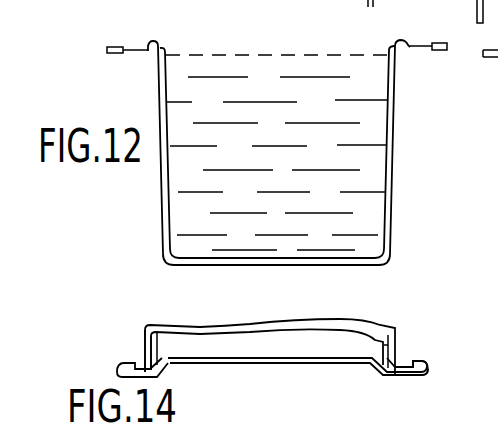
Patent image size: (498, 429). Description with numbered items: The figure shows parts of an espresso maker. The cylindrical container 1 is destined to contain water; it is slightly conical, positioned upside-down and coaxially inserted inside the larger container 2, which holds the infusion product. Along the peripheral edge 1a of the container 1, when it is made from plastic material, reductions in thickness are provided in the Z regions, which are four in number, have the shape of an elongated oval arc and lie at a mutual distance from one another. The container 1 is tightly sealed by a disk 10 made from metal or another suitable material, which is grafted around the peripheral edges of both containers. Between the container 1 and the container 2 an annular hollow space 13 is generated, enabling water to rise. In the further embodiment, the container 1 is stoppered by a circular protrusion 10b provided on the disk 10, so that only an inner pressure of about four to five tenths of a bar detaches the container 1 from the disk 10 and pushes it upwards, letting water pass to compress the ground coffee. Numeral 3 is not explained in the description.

In FIG. 12, the cylindrical container 1 is at (165, 192).
In FIG. 12, the peripheral edge 1a is at (107, 52).
In FIG. 12, the Z regions Z is at (137, 50).
In FIG. 14, the larger container 2 is at (398, 339).
In FIG. 14, the seal 3 is at (400, 357).
In FIG. 14, the disk 10 is at (284, 363).
In FIG. 14, the circular protrusion 10b is at (382, 375).
In FIG. 14, the annular hollow space 13 is at (148, 342).